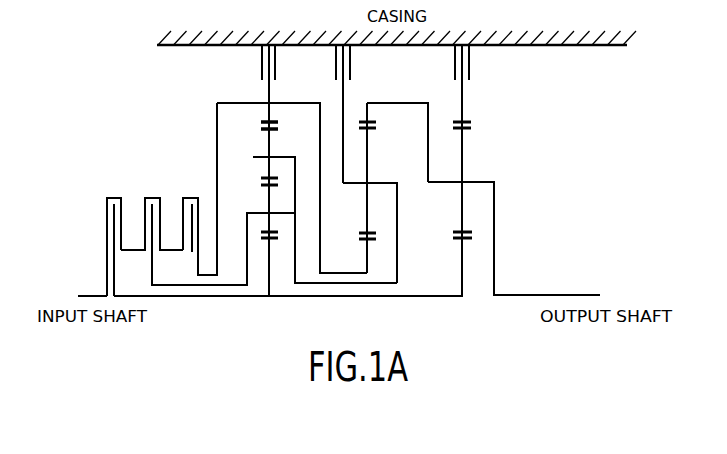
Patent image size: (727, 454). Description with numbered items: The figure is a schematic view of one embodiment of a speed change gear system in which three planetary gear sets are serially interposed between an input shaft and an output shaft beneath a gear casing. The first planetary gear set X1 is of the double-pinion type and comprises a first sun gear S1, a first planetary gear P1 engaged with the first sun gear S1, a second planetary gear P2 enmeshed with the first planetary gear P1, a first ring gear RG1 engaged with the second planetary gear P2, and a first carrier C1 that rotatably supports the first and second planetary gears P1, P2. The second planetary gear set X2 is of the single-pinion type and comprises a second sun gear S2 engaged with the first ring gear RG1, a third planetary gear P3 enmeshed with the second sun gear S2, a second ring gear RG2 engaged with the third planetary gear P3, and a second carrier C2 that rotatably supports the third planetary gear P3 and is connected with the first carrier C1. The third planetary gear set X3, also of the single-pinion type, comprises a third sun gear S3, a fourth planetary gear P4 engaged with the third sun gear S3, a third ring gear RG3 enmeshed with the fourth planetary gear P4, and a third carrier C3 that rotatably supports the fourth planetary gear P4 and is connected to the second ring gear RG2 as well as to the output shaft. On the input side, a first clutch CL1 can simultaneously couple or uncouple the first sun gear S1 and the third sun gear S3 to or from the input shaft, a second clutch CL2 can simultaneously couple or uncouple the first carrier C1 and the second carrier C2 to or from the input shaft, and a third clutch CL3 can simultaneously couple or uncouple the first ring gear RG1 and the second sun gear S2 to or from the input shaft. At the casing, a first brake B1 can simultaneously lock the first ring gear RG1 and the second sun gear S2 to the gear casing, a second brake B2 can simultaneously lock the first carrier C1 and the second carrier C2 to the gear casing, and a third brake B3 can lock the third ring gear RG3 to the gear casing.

The first clutch CL1 is at (112, 194).
The second clutch CL2 is at (154, 196).
The third clutch CL3 is at (199, 183).
The first brake B1 is at (258, 60).
The second brake B2 is at (352, 60).
The third brake B3 is at (471, 64).
The first ring gear RG1 is at (272, 112).
The second ring gear RG2 is at (370, 112).
The third ring gear RG3 is at (465, 112).
The first planetary gear P1 is at (268, 196).
The second planetary gear P2 is at (267, 142).
The third planetary gear P3 is at (366, 203).
The fourth planetary gear P4 is at (464, 157).
The first carrier C1 is at (297, 167).
The second carrier C2 is at (385, 180).
The third carrier C3 is at (480, 185).
The first sun gear S1 is at (270, 243).
The second sun gear S2 is at (366, 250).
The third sun gear S3 is at (462, 250).
The first planetary gear set X1 is at (263, 258).
The second planetary gear set X2 is at (374, 250).
The third planetary gear set X3 is at (470, 250).